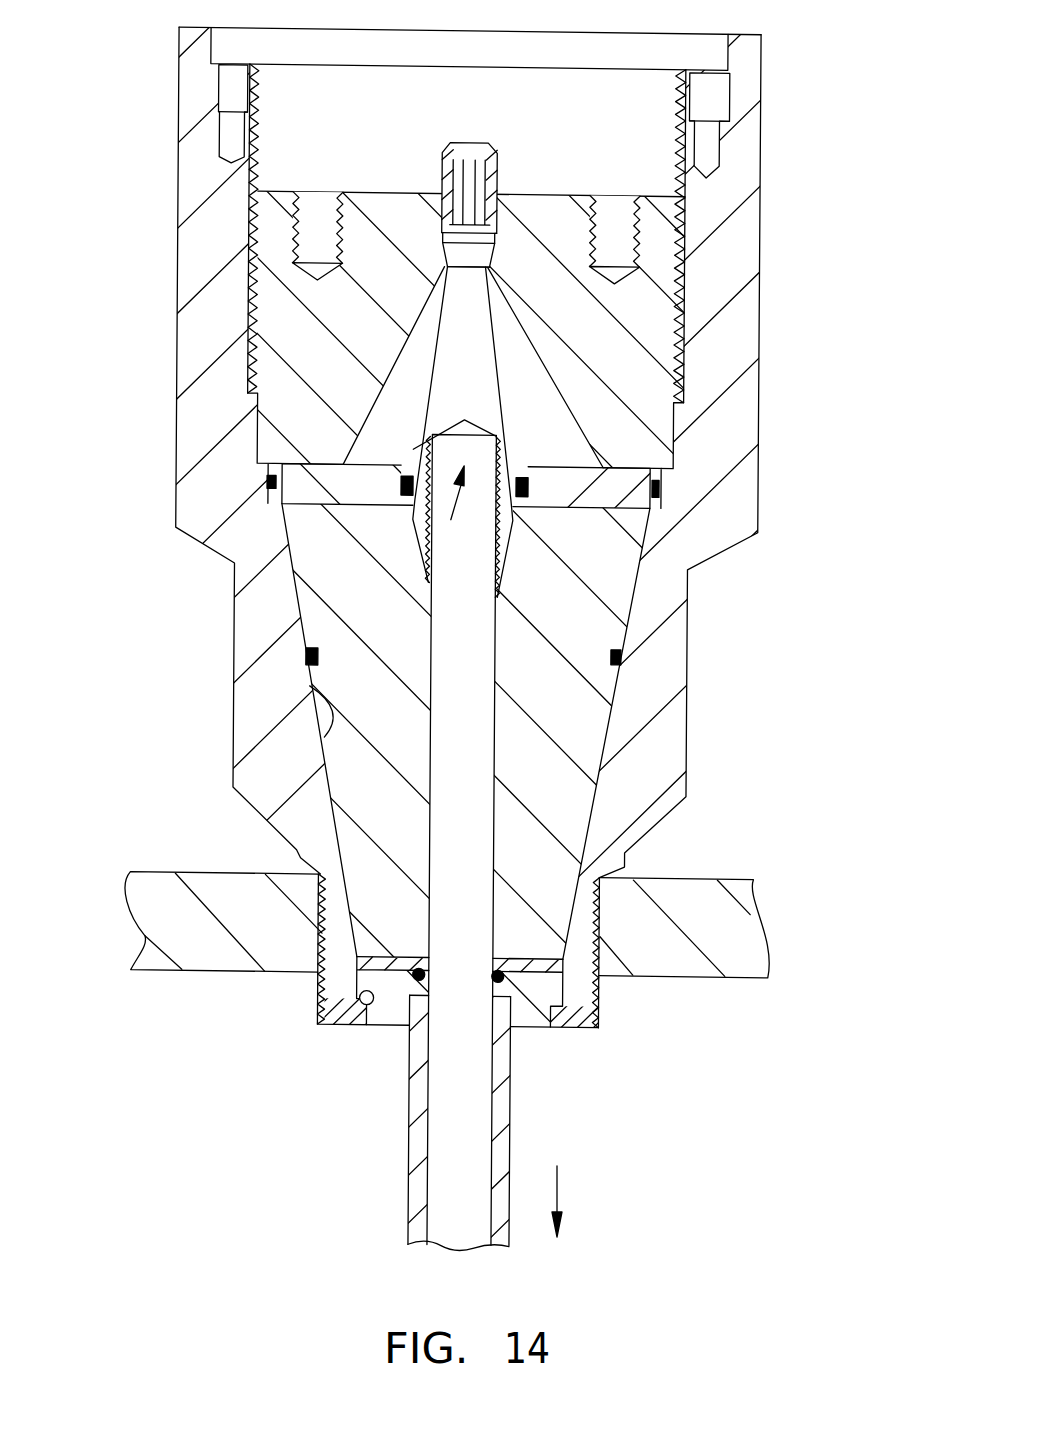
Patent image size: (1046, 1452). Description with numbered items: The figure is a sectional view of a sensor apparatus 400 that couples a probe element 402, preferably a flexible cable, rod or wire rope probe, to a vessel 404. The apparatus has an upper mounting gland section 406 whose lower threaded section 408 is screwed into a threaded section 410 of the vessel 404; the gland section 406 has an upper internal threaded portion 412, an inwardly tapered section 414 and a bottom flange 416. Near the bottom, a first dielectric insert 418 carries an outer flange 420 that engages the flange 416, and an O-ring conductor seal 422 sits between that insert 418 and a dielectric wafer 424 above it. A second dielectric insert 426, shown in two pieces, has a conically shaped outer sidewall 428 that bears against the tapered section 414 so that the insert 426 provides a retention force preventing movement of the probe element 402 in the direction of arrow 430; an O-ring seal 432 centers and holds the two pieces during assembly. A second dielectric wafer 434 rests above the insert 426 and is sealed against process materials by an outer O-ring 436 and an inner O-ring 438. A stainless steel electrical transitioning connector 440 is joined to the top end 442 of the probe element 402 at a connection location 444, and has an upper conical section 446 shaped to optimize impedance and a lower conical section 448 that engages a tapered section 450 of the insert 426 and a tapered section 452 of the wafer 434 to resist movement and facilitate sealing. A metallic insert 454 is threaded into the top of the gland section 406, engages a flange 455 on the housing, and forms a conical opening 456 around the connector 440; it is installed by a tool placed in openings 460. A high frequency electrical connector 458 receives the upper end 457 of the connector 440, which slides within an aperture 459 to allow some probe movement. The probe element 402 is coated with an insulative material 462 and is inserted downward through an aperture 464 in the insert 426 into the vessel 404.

The sensor apparatus 400 is at (797, 232).
The probe element 402 is at (455, 1225).
The vessel 404 is at (700, 905).
The upper mounting gland section 406 is at (725, 373).
The lower threaded section 408 is at (316, 1010).
The threaded section of vessel 410 is at (600, 1002).
The upper internal threaded portion 412 is at (252, 104).
The inwardly tapered section 414 is at (303, 708).
The bottom flange 416 is at (367, 1000).
The first dielectric insert 418 is at (531, 1012).
The outer flange 420 is at (570, 1034).
The O-ring conductor seal 422 is at (402, 1065).
The dielectric wafer 424 is at (595, 940).
The second dielectric insert 426 is at (580, 752).
The tapered outer sidewall 428 is at (617, 693).
The arrow 430 is at (557, 1187).
The O-ring seal 432 is at (621, 659).
The second dielectric wafer 434 is at (616, 490).
The outer O-ring 436 is at (658, 490).
The inner O-ring 438 is at (303, 662).
The electrical transitioning connector 440 is at (396, 440).
The top end of probe element 442 is at (445, 524).
The connection location 444 is at (490, 572).
The upper conical section 446 is at (507, 370).
The lower conical section 448 is at (545, 524).
The tapered section of insert 450 is at (308, 702).
The tapered section of wafer 452 is at (540, 455).
The metallic insert 454 is at (367, 227).
The flange 455 is at (267, 492).
The conical opening 456 is at (399, 372).
The upper end of connector 457 is at (483, 210).
The high frequency electrical connector 458 is at (498, 167).
The aperture 459 is at (482, 145).
The openings 460 is at (628, 197).
The insulative material 462 is at (406, 1225).
The aperture 464 is at (320, 878).